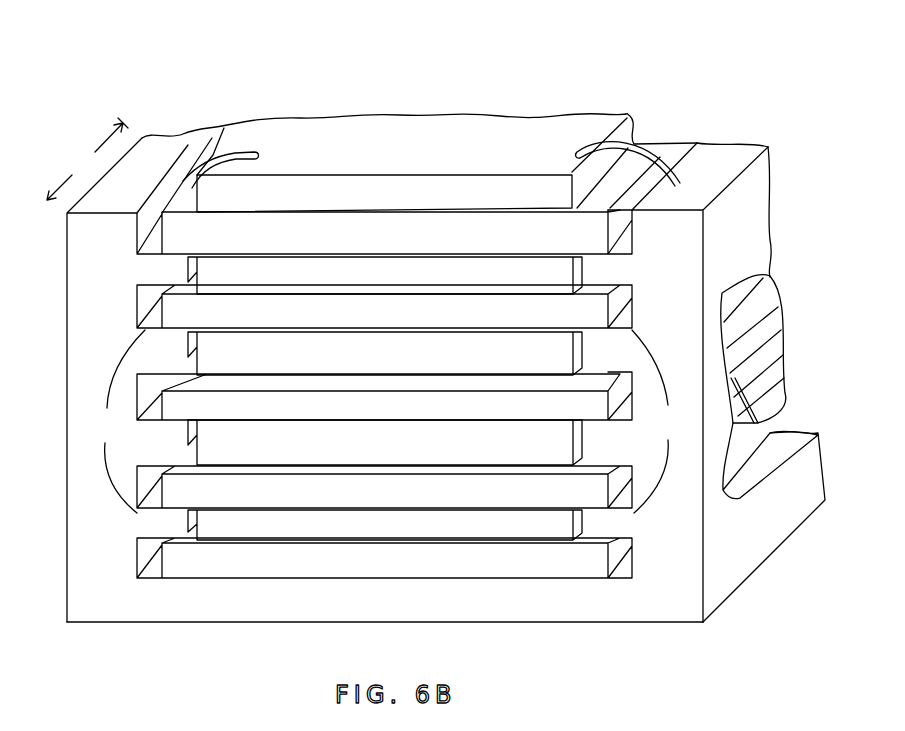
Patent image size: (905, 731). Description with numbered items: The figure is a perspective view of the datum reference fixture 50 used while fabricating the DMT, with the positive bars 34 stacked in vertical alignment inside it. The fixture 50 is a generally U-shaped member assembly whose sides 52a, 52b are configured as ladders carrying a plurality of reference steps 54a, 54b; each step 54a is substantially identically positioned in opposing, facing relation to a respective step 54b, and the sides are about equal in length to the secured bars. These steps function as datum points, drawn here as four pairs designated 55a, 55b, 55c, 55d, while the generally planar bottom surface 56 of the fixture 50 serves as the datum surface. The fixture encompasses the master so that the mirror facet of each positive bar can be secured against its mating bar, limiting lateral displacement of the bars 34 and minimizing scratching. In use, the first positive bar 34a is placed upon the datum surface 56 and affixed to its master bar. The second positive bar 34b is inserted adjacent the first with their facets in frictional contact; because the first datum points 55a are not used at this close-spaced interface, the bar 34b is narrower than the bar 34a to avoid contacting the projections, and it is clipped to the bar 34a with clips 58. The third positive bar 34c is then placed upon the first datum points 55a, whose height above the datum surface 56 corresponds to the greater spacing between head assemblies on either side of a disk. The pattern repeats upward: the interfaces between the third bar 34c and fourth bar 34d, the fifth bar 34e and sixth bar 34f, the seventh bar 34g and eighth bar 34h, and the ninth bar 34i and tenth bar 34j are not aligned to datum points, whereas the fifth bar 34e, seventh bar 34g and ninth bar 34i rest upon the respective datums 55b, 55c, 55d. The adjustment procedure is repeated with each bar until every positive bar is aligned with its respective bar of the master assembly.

The positive bar 34 is at (627, 128).
The first positive bar 34a is at (474, 566).
The second positive bar 34b is at (472, 536).
The third positive bar 34c is at (470, 501).
The fourth positive bar 34d is at (471, 456).
The fifth positive bar 34e is at (468, 413).
The sixth positive bar 34f is at (466, 368).
The seventh positive bar 34g is at (466, 323).
The eighth positive bar 34h is at (466, 287).
The ninth positive bar 34i is at (457, 242).
The tenth positive bar 34j is at (457, 202).
The datum reference fixture 50 is at (181, 104).
The side 52a is at (70, 540).
The side 52b is at (723, 558).
The reference step 54a is at (138, 421).
The reference step 54b is at (632, 413).
The first datum points 55a is at (180, 535).
The second datum points 55b is at (180, 455).
The third datum points 55c is at (180, 364).
The fourth datum points 55d is at (180, 286).
The bottom surface 56 is at (152, 578).
The clips 58 is at (215, 150).